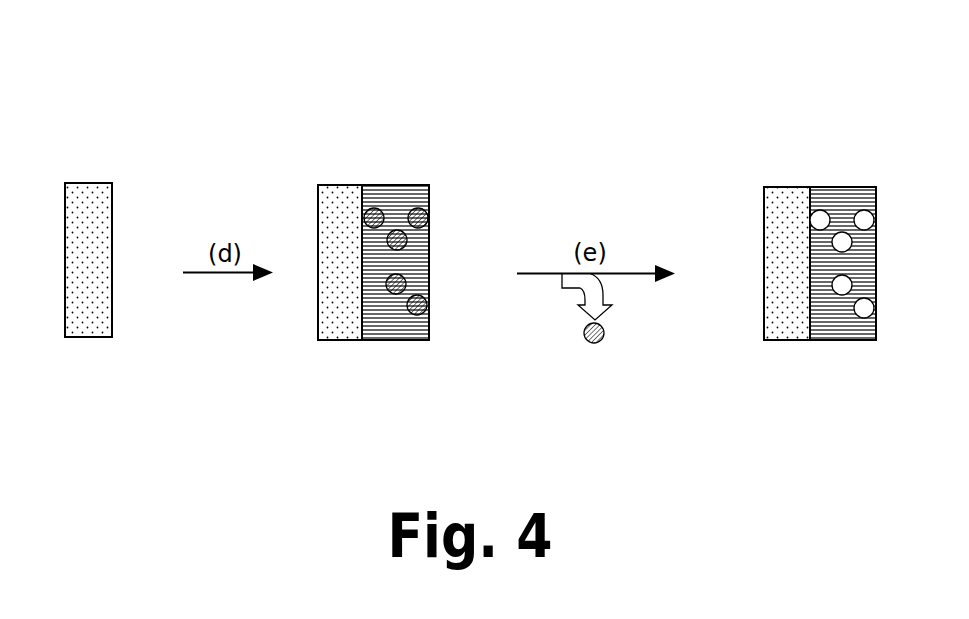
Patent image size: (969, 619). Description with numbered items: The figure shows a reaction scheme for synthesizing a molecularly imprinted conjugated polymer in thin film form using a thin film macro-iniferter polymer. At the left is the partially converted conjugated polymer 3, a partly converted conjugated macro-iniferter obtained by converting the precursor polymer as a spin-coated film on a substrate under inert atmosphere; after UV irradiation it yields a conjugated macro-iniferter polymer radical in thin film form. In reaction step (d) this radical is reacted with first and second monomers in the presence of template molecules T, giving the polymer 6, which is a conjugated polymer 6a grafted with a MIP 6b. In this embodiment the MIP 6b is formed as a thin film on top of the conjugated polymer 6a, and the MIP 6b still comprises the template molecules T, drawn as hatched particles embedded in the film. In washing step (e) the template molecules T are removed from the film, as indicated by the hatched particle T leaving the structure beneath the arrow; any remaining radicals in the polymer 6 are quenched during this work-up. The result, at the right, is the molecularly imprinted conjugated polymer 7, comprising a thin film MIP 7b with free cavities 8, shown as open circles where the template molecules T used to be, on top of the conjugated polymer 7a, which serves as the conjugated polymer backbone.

The partially converted conjugated polymer 3 is at (89, 327).
The polymer 6 is at (360, 218).
The conjugated polymer 6a is at (340, 323).
The MIP 6b is at (400, 271).
The template molecule T is at (381, 208).
The molecularly imprinted conjugated polymer 7 is at (810, 219).
The conjugated polymer 7a is at (787, 323).
The thin film MIP 7b is at (847, 265).
The cavities 8 is at (820, 216).